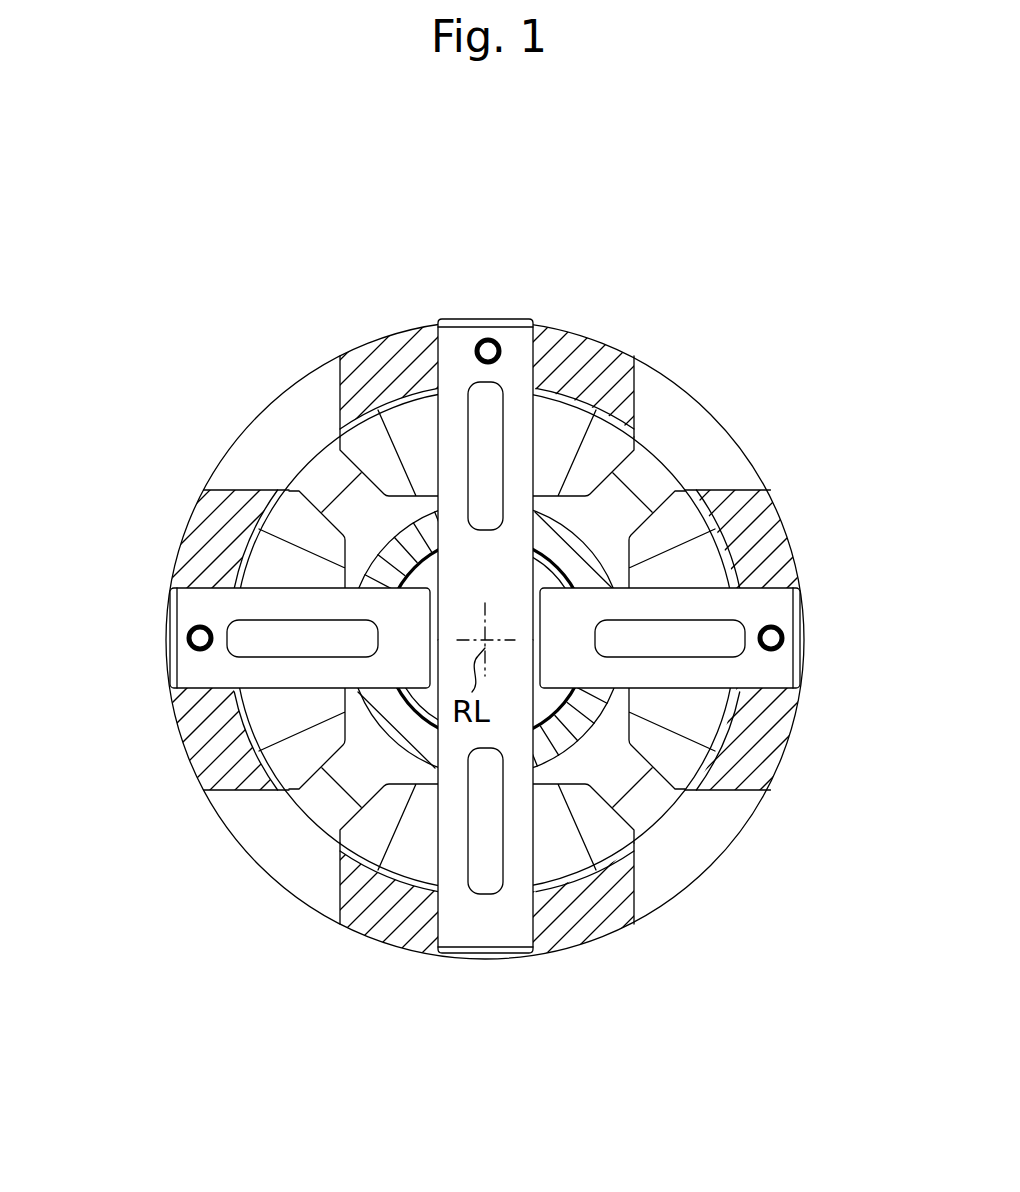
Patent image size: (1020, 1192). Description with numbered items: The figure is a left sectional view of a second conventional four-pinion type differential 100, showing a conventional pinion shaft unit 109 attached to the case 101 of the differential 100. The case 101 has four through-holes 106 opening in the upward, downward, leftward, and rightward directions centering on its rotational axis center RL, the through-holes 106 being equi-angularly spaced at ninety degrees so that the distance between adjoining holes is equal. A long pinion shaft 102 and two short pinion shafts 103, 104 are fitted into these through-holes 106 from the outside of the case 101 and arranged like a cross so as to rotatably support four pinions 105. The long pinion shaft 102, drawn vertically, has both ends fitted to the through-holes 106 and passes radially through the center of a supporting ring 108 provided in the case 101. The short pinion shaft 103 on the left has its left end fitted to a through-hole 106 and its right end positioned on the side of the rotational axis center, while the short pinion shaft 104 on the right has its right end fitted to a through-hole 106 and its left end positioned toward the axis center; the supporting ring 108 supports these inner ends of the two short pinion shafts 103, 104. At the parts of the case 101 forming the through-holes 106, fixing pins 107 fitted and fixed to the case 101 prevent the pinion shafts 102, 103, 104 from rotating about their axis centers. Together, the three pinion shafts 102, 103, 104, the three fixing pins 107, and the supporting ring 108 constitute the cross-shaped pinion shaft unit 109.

The differential 100 is at (337, 332).
The case 101 is at (397, 330).
The long pinion shaft 102 is at (517, 347).
The short pinion shaft 103 is at (218, 676).
The short pinion shaft 104 is at (756, 672).
The pinion 105 is at (400, 857).
The through-hole 106 is at (457, 357).
The fixing pin 107 is at (490, 340).
The supporting ring 108 is at (573, 553).
The pinion shaft unit 109 is at (476, 638).